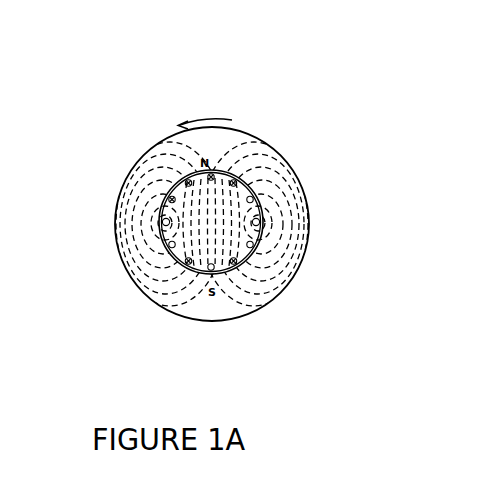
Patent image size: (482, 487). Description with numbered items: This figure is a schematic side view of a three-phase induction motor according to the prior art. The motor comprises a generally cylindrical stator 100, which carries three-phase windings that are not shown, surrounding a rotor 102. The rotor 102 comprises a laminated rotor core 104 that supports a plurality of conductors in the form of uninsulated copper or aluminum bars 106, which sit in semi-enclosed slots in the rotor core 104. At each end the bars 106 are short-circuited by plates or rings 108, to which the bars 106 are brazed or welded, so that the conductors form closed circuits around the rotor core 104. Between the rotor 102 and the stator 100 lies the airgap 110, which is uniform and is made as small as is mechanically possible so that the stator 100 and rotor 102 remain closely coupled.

The stator 100 is at (199, 312).
The rotor 102 is at (214, 169).
The laminated rotor core 104 is at (222, 236).
The bars 106 is at (172, 203).
The plates or rings 108 is at (254, 247).
The airgap 110 is at (191, 265).